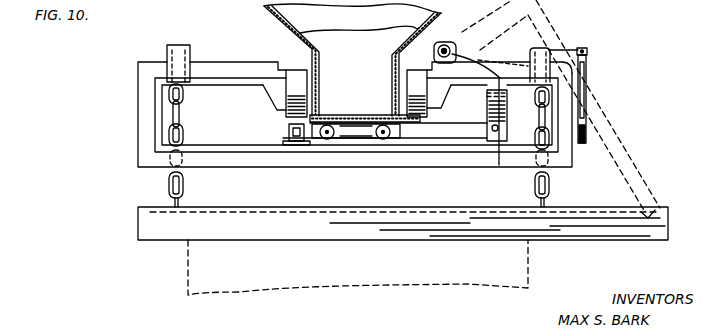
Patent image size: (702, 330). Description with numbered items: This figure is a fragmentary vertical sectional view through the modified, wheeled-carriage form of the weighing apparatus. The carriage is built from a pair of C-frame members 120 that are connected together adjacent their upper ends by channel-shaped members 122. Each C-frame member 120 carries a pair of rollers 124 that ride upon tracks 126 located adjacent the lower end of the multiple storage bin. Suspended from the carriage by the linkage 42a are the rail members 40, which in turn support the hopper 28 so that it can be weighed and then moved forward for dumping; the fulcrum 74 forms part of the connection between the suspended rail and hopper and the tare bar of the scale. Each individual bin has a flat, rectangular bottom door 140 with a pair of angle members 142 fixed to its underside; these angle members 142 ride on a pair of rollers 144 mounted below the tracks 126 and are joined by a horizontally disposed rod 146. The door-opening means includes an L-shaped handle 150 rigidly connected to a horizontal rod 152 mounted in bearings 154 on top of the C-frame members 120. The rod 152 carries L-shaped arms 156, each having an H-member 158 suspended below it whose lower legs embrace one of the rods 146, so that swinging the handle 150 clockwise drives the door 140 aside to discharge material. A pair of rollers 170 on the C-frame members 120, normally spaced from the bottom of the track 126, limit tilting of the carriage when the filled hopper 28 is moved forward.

The C-frame members 120 is at (138, 126).
The channel-shaped members 122 is at (178, 45).
The rollers 124 is at (297, 93).
The tracks 126 is at (300, 116).
The bottom door 140 is at (341, 141).
The angle members 142 is at (407, 138).
The rollers 144 is at (322, 141).
The rod 146 is at (499, 165).
The L-shaped handle 150 is at (618, 164).
The horizontal rod 152 is at (448, 43).
The bearings 154 is at (436, 56).
The L-shaped arms 156 is at (473, 59).
The H-member 158 is at (502, 113).
The rollers 170 is at (289, 142).
The fulcrum 74 is at (553, 63).
The linkage 42a is at (168, 187).
The rail members 40 is at (403, 235).
The hopper 28 is at (276, 284).